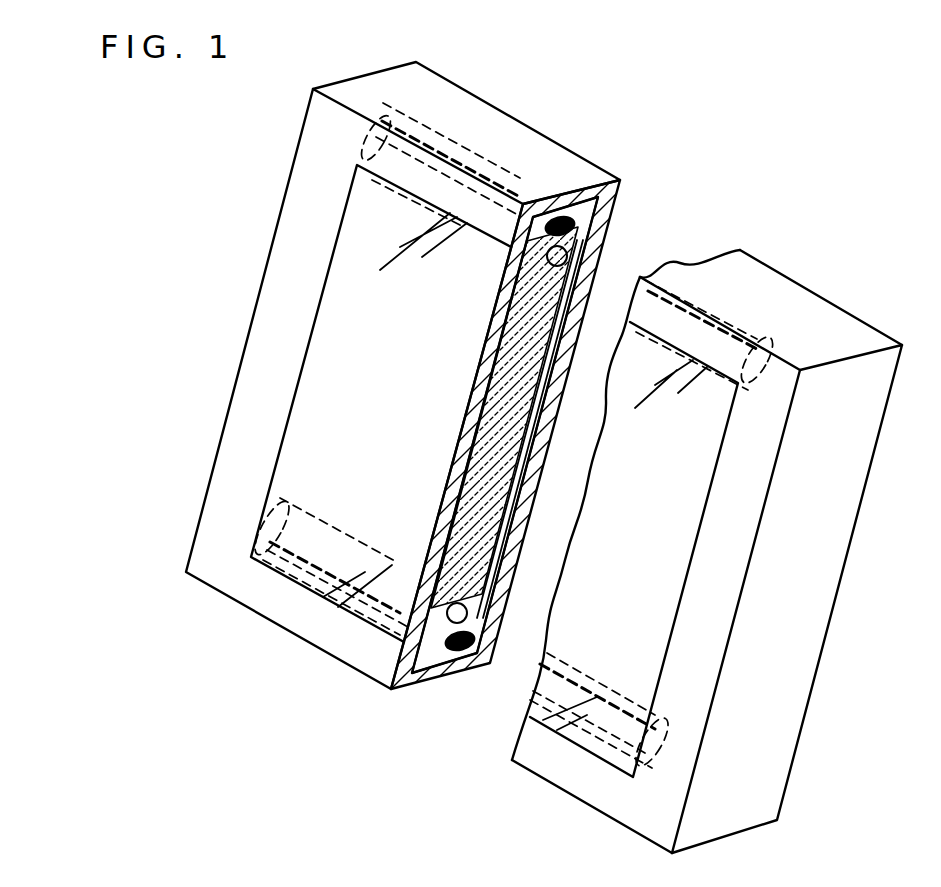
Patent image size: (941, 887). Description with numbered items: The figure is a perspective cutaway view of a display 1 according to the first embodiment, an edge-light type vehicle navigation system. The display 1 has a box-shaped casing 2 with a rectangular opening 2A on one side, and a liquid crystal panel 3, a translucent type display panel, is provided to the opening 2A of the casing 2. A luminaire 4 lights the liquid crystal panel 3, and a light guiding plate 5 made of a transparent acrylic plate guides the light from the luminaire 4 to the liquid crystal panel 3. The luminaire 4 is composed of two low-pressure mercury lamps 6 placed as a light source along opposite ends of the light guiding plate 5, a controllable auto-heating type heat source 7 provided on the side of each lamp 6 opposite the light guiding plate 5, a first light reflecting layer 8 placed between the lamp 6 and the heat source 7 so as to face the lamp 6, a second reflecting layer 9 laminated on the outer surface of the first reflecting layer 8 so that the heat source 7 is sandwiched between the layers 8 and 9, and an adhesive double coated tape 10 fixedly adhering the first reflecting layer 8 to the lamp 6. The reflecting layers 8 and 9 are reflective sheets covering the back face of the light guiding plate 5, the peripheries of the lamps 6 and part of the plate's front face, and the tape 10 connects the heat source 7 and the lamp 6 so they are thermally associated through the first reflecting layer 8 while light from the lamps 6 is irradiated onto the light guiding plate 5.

The display 1 is at (852, 233).
The casing 2 is at (310, 172).
The rectangular opening 2A is at (328, 287).
The liquid crystal panel 3 is at (322, 435).
The luminaire 4 is at (455, 688).
The light guiding plate 5 is at (592, 295).
The low-pressure mercury lamp 6 is at (583, 233).
The controllable auto-heating type heat source 7 is at (462, 150).
The first light reflecting layer 8 is at (523, 318).
The second light reflecting layer 9 is at (520, 477).
The adhesive double coated tape 10 is at (560, 207).